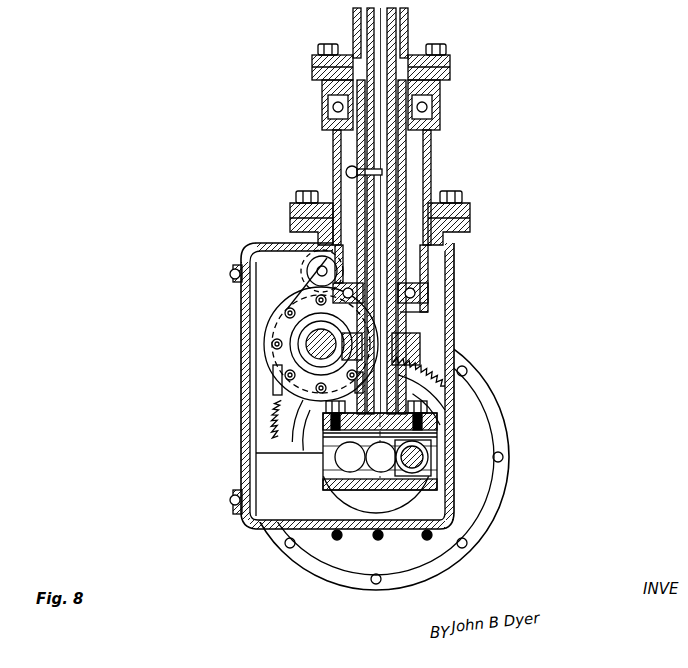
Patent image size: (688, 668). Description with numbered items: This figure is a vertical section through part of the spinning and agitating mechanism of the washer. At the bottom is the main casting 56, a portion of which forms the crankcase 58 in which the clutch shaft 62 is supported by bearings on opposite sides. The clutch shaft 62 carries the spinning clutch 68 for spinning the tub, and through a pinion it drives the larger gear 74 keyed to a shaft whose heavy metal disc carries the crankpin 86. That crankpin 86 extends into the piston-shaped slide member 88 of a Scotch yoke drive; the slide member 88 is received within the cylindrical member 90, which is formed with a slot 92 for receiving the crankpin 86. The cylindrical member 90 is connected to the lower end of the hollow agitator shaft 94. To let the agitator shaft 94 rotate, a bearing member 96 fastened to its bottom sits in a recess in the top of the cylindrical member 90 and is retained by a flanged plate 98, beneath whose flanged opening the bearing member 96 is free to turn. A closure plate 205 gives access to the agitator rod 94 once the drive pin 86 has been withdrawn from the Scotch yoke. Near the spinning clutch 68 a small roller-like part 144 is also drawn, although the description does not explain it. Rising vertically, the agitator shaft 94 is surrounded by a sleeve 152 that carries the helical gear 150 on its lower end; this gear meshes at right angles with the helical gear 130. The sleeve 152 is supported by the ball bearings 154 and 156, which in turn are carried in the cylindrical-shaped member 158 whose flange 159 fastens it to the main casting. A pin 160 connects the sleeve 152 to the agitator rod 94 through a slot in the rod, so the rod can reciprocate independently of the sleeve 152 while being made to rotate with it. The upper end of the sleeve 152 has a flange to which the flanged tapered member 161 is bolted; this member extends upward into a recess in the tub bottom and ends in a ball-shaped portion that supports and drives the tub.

The flanged tapered member 161 is at (409, 18).
The ball bearing 156 is at (428, 111).
The agitator shaft 94 is at (385, 153).
The pin 160 is at (381, 163).
The sleeve 152 is at (383, 175).
The cylindrical-shaped member 158 is at (335, 166).
The flange 159 is at (470, 210).
The crankcase 58 is at (262, 243).
The main casting 56 is at (254, 522).
The cam roller 144 is at (317, 272).
The spinning clutch 68 is at (291, 310).
The helical gear 130 is at (326, 340).
The clutch shaft 62 is at (312, 352).
The ball bearing 154 is at (412, 293).
The helical gear 150 is at (420, 347).
The flanged plate 98 is at (458, 396).
The larger gear 74 is at (285, 426).
The bearing member 96 is at (430, 420).
The slide member 88 is at (440, 441).
The slot 92 is at (365, 457).
The crankpin 86 is at (432, 463).
The cylindrical member 90 is at (330, 488).
The closure plate 205 is at (404, 540).